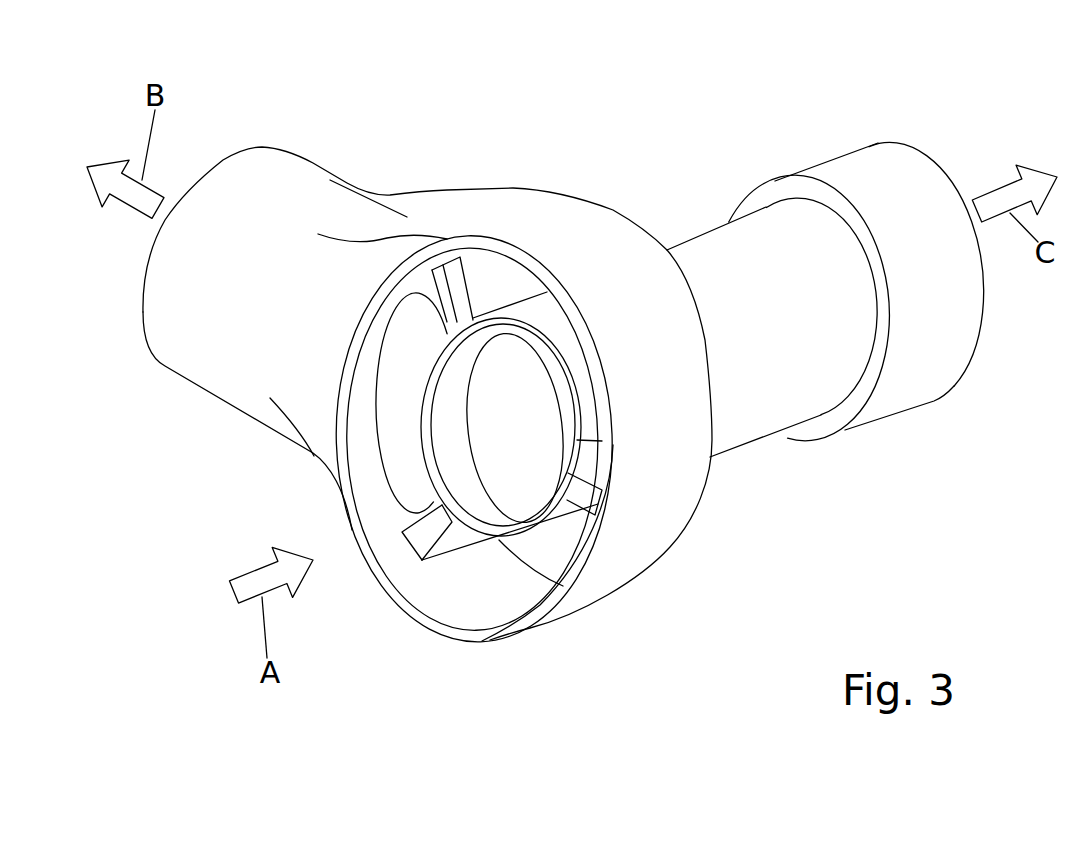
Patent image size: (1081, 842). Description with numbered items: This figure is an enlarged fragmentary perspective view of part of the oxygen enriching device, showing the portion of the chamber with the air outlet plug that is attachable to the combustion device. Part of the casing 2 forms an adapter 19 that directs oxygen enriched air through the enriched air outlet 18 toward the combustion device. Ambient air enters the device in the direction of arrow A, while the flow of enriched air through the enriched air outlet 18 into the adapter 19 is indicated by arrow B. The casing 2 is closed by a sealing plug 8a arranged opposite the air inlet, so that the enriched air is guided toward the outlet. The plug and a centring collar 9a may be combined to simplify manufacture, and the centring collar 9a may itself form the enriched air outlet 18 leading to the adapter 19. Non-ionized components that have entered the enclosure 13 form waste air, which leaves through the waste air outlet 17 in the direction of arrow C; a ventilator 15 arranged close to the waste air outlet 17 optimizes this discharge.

The casing 2 is at (433, 623).
The sealing plug 8a is at (553, 547).
The centring collar 9a is at (493, 287).
The enclosure 13 is at (570, 508).
The ventilator 15 is at (923, 308).
The waste air outlet 17 is at (928, 157).
The enriched air outlet 18 is at (405, 423).
The adapter 19 is at (197, 312).